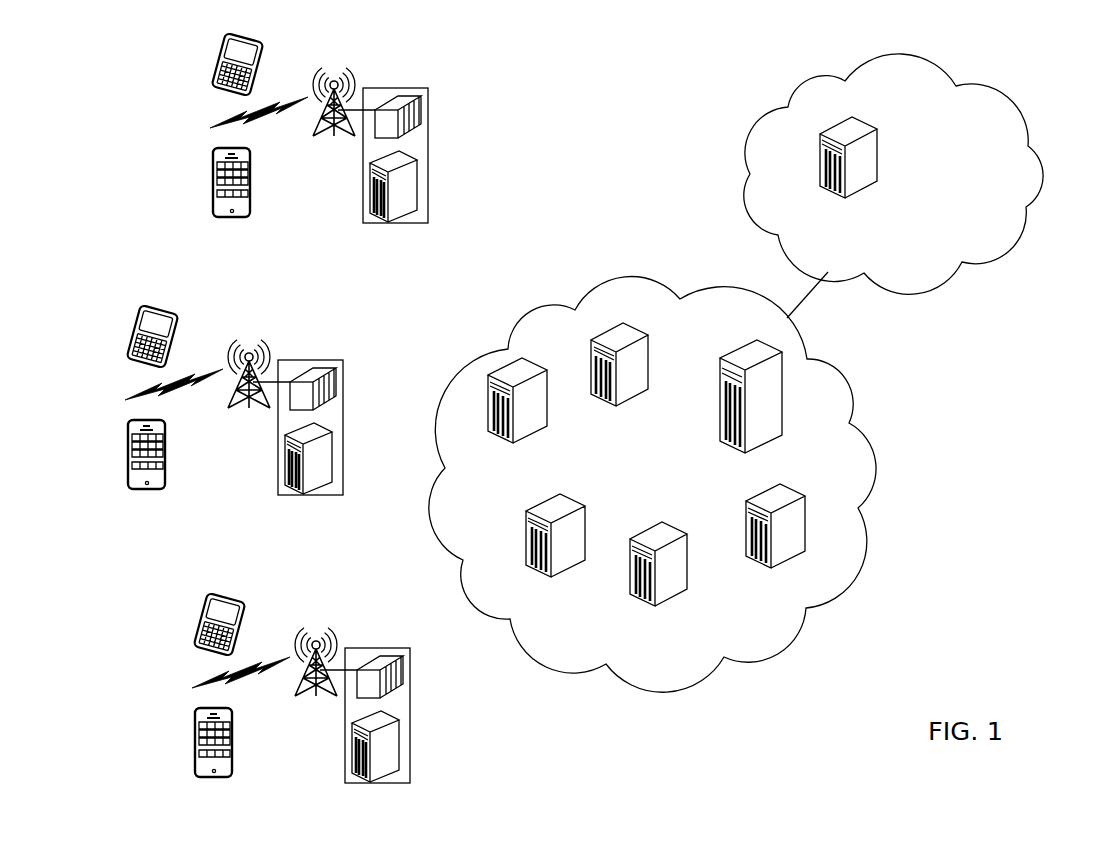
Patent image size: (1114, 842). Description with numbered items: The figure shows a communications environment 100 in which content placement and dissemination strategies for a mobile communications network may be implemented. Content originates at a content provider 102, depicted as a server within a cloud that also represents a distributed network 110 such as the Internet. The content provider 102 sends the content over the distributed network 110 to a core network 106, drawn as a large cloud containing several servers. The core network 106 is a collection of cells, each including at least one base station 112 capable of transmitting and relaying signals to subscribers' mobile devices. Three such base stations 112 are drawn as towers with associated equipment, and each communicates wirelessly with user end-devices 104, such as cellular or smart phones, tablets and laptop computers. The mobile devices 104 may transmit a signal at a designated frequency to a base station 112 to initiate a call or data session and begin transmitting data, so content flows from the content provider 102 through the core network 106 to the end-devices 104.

The communications environment 100 is at (619, 91).
The content provider 102 is at (1000, 173).
The user end-devices 104 is at (182, 92).
The core network 106 is at (622, 674).
The distributed network 110 is at (873, 228).
The base stations 112 is at (413, 88).